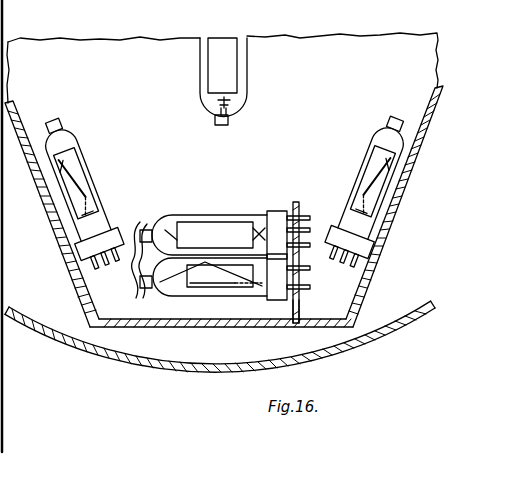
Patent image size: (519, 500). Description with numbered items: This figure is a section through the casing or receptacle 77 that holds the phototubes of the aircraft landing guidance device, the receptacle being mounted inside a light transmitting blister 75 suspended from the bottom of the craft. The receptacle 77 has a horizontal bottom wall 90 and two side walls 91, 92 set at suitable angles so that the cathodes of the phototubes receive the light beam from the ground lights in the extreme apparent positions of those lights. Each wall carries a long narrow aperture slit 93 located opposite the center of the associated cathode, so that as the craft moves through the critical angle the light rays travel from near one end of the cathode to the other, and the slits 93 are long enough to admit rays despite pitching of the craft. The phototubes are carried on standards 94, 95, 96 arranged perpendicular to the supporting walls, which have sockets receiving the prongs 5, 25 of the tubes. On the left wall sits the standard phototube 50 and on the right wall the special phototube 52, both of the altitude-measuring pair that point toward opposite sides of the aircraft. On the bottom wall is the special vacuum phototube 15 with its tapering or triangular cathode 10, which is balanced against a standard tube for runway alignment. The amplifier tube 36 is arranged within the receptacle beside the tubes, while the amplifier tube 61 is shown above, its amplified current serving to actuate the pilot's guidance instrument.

The prongs 5 is at (302, 213).
The tapering cathode 10 is at (205, 264).
The special vacuum phototube 15 is at (162, 296).
The prongs 25 is at (113, 266).
The amplifier tube 36 is at (170, 218).
The standard phototube 50 is at (70, 134).
The special phototube 52 is at (376, 142).
The amplifier tube 61 is at (243, 69).
The light transmitting blister 75 is at (104, 362).
The receptacle 77 is at (4, 378).
The bottom wall 90 is at (163, 327).
The side wall 91 is at (55, 230).
The side wall 92 is at (388, 237).
The aperture slits 93 is at (43, 198).
The standard 94 is at (88, 272).
The standard 95 is at (300, 312).
The standard 96 is at (367, 283).